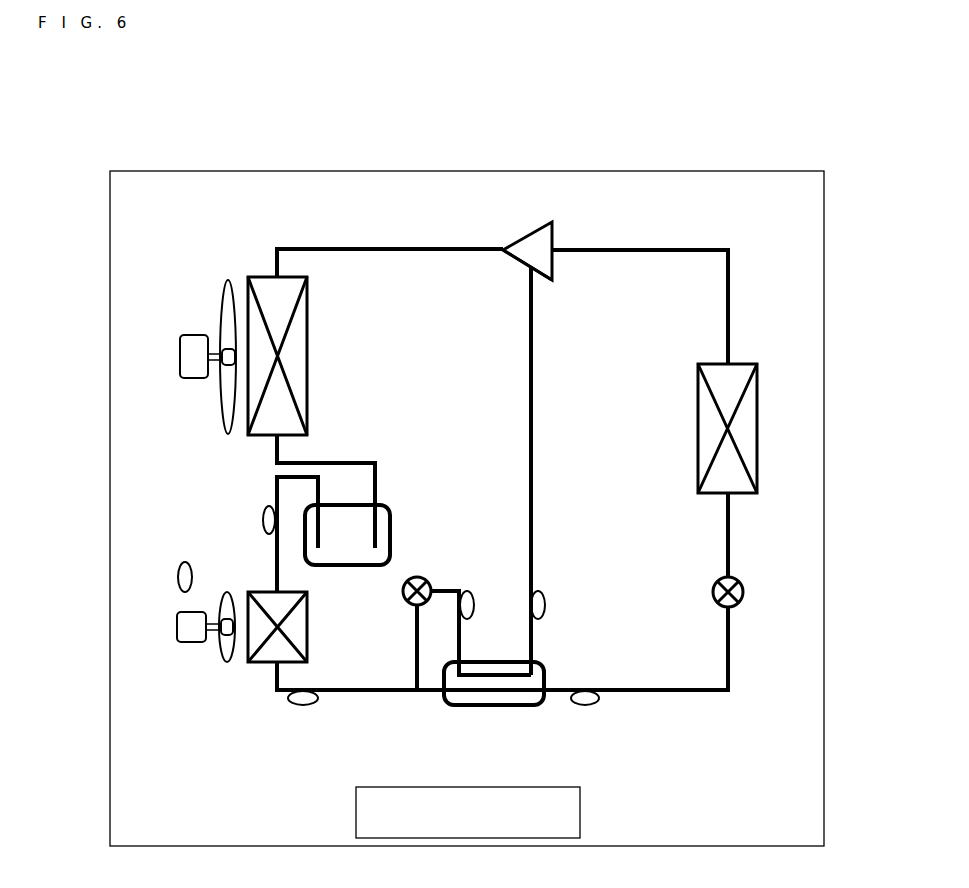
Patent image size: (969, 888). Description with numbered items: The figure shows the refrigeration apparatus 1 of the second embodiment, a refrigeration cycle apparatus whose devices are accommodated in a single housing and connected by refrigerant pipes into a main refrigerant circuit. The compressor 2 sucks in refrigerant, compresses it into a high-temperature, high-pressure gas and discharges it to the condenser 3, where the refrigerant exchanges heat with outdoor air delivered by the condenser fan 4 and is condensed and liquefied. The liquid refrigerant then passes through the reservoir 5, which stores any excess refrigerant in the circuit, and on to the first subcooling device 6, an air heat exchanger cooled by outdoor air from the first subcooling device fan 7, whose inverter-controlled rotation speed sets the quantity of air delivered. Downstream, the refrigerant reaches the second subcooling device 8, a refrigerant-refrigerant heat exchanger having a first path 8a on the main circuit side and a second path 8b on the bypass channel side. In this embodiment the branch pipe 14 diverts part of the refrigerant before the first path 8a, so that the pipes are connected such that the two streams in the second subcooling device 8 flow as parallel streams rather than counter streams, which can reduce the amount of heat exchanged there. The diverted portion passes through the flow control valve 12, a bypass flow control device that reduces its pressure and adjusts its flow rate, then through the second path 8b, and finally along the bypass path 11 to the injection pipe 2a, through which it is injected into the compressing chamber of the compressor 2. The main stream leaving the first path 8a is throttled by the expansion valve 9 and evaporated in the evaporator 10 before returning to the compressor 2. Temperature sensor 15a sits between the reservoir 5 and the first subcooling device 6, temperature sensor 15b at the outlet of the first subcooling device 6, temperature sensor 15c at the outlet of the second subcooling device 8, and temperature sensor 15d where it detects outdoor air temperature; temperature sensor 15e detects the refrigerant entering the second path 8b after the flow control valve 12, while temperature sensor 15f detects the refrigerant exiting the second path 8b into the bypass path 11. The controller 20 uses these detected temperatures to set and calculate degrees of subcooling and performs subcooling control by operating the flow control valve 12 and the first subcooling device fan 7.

The refrigeration apparatus 1 is at (645, 171).
The compressor 2 is at (517, 243).
The injection pipe 2a is at (522, 276).
The condenser 3 is at (312, 355).
The condenser fan 4 is at (180, 338).
The reservoir 5 is at (392, 508).
The first subcooling device 6 is at (312, 642).
The first subcooling device fan 7 is at (184, 640).
The second subcooling device 8 is at (440, 706).
The first path 8a is at (514, 706).
The second path 8b is at (497, 668).
The expansion valve 9 is at (745, 605).
The evaporator 10 is at (762, 428).
The bypass path 11 is at (537, 432).
The flow control valve 12 is at (421, 573).
The branch pipe 14 is at (412, 688).
The temperature sensor 15a is at (262, 517).
The temperature sensor 15b is at (310, 712).
The temperature sensor 15c is at (592, 710).
The temperature sensor 15d is at (179, 568).
The temperature sensor 15e is at (480, 591).
The temperature sensor 15f is at (548, 596).
The controller 20 is at (583, 823).